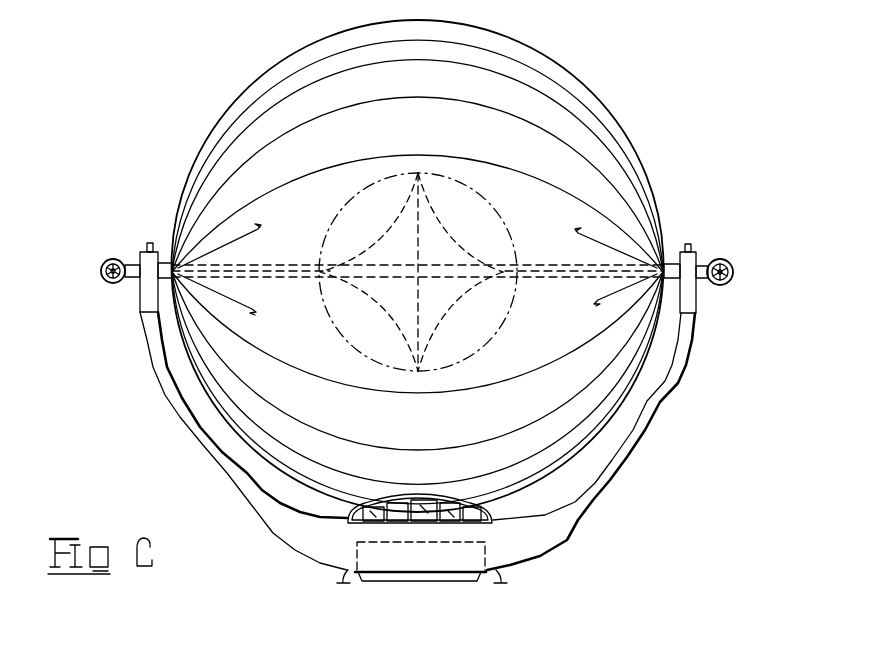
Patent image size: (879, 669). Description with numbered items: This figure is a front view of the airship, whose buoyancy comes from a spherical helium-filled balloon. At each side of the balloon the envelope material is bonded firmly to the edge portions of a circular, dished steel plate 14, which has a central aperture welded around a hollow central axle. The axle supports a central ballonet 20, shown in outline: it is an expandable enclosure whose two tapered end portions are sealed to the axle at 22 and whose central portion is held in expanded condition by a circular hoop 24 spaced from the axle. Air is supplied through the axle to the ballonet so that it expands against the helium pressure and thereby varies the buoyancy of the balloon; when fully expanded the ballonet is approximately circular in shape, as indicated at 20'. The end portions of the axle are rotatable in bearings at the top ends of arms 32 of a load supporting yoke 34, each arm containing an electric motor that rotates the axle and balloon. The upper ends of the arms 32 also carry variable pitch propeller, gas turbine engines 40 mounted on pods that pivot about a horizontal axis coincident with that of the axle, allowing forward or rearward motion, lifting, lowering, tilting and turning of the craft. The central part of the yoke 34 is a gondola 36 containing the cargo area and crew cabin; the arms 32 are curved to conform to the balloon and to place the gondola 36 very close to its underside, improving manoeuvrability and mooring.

The dished steel plate 14 is at (665, 248).
The central ballonet 20 is at (576, 321).
The fully expanded ballonet 20' is at (579, 256).
The sealed end portions of ballonet 22 is at (493, 267).
The circular hoop 24 is at (418, 173).
The arms 32 is at (663, 397).
The load supporting yoke 34 is at (584, 513).
The gondola 36 is at (298, 555).
The gas turbine engines 40 is at (721, 258).